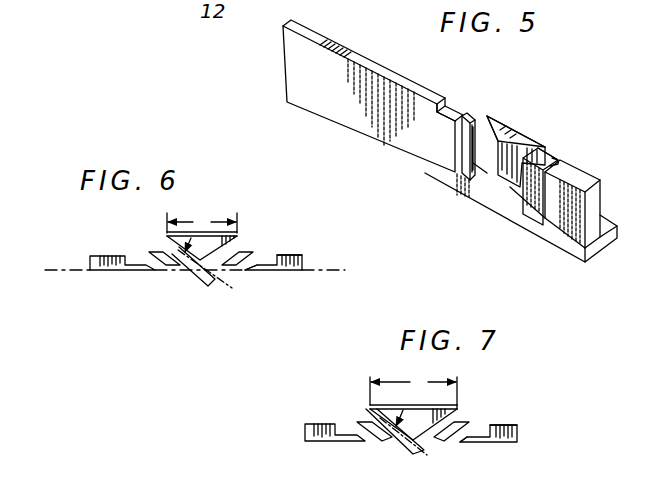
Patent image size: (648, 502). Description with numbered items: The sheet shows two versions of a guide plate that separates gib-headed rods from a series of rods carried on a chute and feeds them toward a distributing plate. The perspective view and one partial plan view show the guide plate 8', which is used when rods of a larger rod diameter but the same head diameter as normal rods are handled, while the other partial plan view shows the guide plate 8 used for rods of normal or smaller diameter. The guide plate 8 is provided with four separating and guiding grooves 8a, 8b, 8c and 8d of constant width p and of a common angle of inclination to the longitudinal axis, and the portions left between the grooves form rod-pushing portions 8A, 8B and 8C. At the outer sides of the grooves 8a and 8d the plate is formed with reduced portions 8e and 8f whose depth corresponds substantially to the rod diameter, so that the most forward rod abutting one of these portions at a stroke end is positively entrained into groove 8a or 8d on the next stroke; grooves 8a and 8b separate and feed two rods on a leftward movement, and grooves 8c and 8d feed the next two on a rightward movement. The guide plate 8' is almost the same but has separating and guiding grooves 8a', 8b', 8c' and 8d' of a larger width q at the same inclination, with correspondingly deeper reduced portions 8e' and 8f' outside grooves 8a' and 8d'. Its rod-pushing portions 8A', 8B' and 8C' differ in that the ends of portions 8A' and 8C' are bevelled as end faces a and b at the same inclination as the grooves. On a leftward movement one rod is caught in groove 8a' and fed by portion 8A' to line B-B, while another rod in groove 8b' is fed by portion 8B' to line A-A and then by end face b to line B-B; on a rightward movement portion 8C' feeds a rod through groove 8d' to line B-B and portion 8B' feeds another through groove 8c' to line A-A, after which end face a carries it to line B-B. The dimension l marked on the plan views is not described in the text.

In FIG. 5, the guide plate 8' is at (373, 96).
In FIG. 6, the guide plate 8' is at (300, 236).
In FIG. 5, the reduced portion 8e' is at (449, 131).
In FIG. 6, the reduced portion 8e' is at (122, 284).
In FIG. 5, the separating and guiding groove 8a' is at (485, 112).
In FIG. 6, the separating and guiding groove 8a' is at (148, 294).
In FIG. 5, the rod-pushing portion 8A' is at (512, 130).
In FIG. 6, the rod-pushing portion 8A' is at (176, 227).
In FIG. 5, the rod-pushing portion 8B' is at (525, 118).
In FIG. 6, the rod-pushing portion 8B' is at (195, 226).
In FIG. 5, the separating and guiding groove 8b' is at (526, 94).
In FIG. 6, the separating and guiding groove 8b' is at (202, 286).
In FIG. 5, the separating and guiding groove 8c' is at (542, 168).
In FIG. 6, the separating and guiding groove 8c' is at (251, 257).
In FIG. 5, the rod-pushing portion 8C' is at (569, 137).
In FIG. 5, the separating and guiding groove 8d' is at (577, 152).
In FIG. 6, the separating and guiding groove 8d' is at (268, 288).
In FIG. 5, the reduced portion 8f' is at (582, 196).
In FIG. 6, the reduced portion 8f' is at (280, 281).
In FIG. 5, the end face a is at (465, 167).
In FIG. 6, the end face a is at (168, 268).
In FIG. 5, the end face b is at (503, 203).
In FIG. 6, the end face b is at (250, 272).
In FIG. 6, the line A- A is at (195, 240).
In FIG. 6, the line B- B is at (189, 263).
In FIG. 6, the length l is at (202, 222).
In FIG. 7, the length l is at (413, 388).
In FIG. 6, the groove width q is at (216, 281).
In FIG. 7, the groove width p is at (434, 459).
In FIG. 7, the guide plate 8 is at (509, 398).
In FIG. 7, the reduced portion 8e is at (335, 450).
In FIG. 7, the separating and guiding groove 8a is at (374, 449).
In FIG. 7, the rod-pushing portion 8A is at (376, 402).
In FIG. 7, the rod-pushing portion 8B is at (430, 406).
In FIG. 7, the separating and guiding groove 8b is at (396, 451).
In FIG. 7, the separating and guiding groove 8c is at (451, 457).
In FIG. 7, the rod-pushing portion 8C is at (486, 402).
In FIG. 7, the separating and guiding groove 8d is at (478, 457).
In FIG. 7, the reduced portion 8f is at (495, 450).